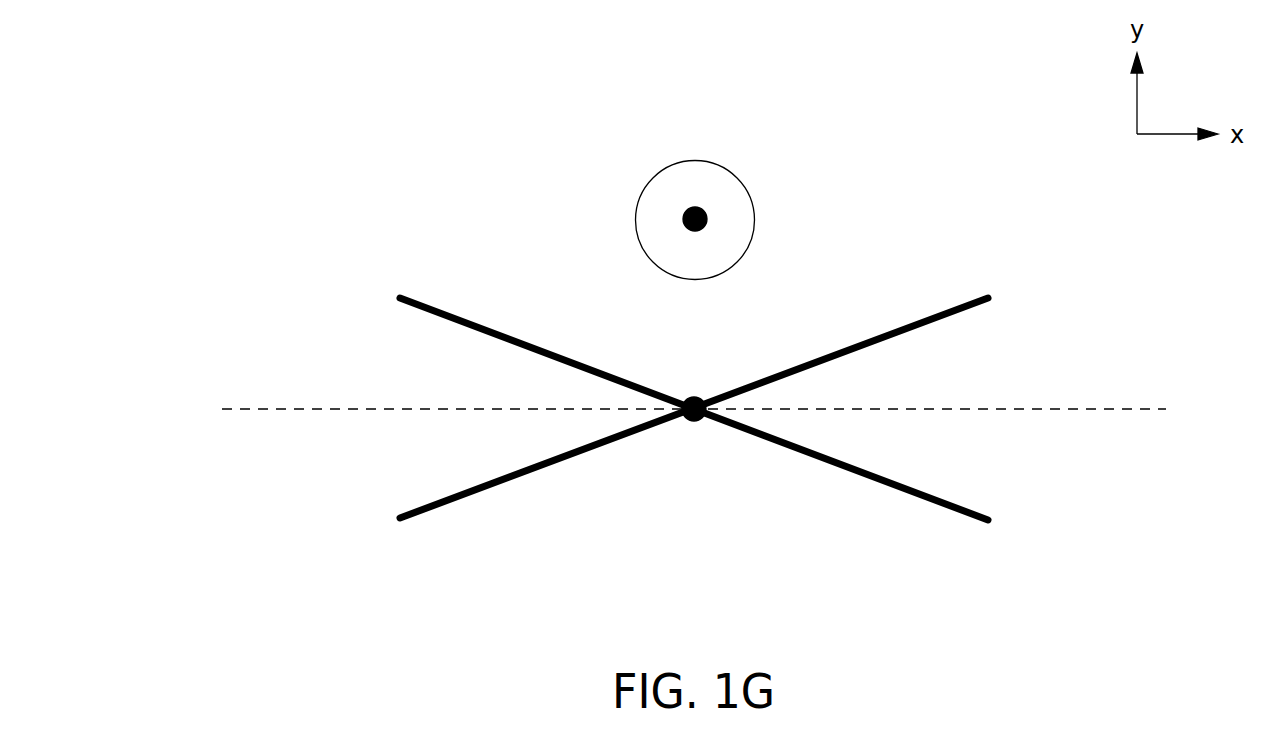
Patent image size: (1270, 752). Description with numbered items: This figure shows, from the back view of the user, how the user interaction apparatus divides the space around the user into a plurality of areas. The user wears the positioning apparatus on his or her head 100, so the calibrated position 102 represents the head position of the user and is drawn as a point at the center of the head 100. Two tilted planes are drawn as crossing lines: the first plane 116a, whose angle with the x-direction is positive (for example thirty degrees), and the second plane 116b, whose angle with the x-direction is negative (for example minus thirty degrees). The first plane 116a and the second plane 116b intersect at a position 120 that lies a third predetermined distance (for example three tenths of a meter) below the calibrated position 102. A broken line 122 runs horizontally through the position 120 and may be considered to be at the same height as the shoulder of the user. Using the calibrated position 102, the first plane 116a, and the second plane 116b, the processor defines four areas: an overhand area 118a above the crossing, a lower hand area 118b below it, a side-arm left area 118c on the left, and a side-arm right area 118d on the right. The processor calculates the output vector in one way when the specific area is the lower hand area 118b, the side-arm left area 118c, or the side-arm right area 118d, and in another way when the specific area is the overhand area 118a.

The head 100 is at (655, 176).
The calibrated position 102 is at (696, 190).
The first plane 116a is at (930, 317).
The second plane 116b is at (457, 315).
The overhand area 118a is at (909, 211).
The lower hand area 118b is at (697, 553).
The side-arm left area 118c is at (376, 373).
The side-arm right area 118d is at (1025, 373).
The position 120 is at (699, 380).
The broken line 122 is at (358, 412).